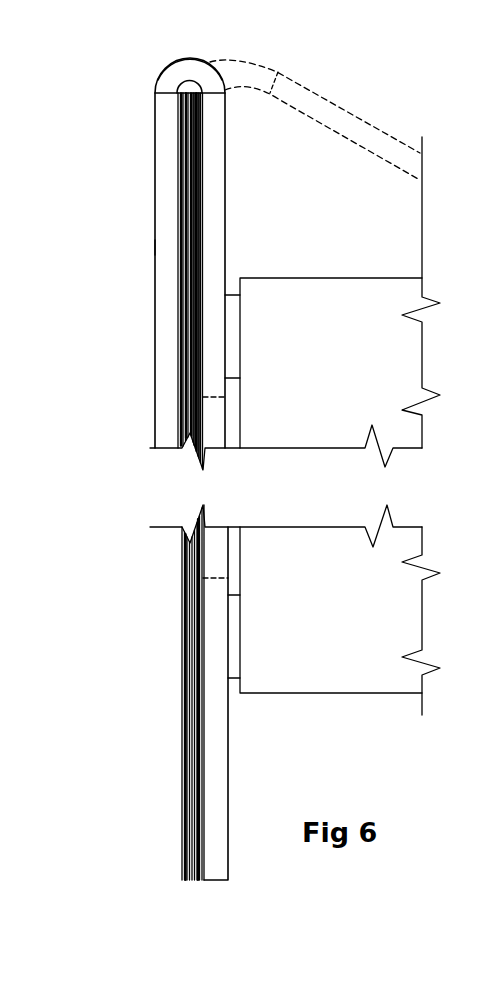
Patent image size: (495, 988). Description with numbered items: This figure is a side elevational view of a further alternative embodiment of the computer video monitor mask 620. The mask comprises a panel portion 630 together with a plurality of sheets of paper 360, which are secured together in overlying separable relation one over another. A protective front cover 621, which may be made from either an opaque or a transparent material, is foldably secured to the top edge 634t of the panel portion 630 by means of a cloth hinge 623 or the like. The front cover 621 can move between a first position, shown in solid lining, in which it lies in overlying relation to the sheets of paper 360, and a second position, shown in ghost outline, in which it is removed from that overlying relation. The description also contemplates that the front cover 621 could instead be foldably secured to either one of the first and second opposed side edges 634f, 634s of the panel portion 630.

The computer video monitor mask 620 is at (103, 96).
The protective front cover 621 is at (350, 122).
The cloth hinge 623 is at (178, 70).
The panel portion 630 is at (215, 182).
The top edge of the panel portion 634t is at (186, 90).
The second opposed side edge of the panel portion 634s is at (215, 211).
The first opposed side edge of the panel portion 634f is at (215, 239).
The sheets of paper 360 is at (207, 886).